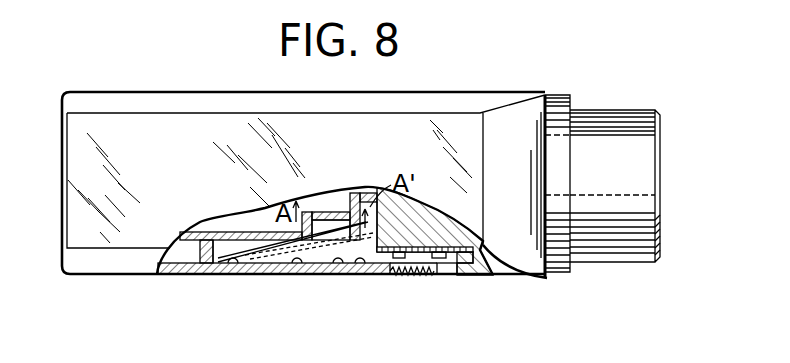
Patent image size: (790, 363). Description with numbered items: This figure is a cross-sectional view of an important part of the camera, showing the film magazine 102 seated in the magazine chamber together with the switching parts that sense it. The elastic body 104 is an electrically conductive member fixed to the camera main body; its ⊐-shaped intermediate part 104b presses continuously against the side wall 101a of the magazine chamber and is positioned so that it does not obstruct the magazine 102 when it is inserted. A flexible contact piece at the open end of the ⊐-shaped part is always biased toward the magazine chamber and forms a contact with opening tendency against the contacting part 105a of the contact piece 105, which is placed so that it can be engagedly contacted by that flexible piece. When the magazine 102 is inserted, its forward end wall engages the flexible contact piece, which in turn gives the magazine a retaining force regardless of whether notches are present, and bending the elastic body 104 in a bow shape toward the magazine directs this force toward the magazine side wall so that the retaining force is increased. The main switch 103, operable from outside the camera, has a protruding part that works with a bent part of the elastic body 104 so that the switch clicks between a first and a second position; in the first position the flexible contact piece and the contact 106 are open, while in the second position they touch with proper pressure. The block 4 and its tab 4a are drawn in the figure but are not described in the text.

The film magazine 102 is at (228, 222).
The block 4 is at (437, 247).
The block tab 4a is at (368, 192).
The side wall 101a is at (298, 266).
The main switch 103 is at (422, 276).
The elastic body 104 is at (338, 260).
The ⊐-shaped intermediate part 104b is at (238, 262).
The contact piece 105 is at (487, 278).
The contacting part 105a is at (381, 254).
The contact 106 is at (470, 252).